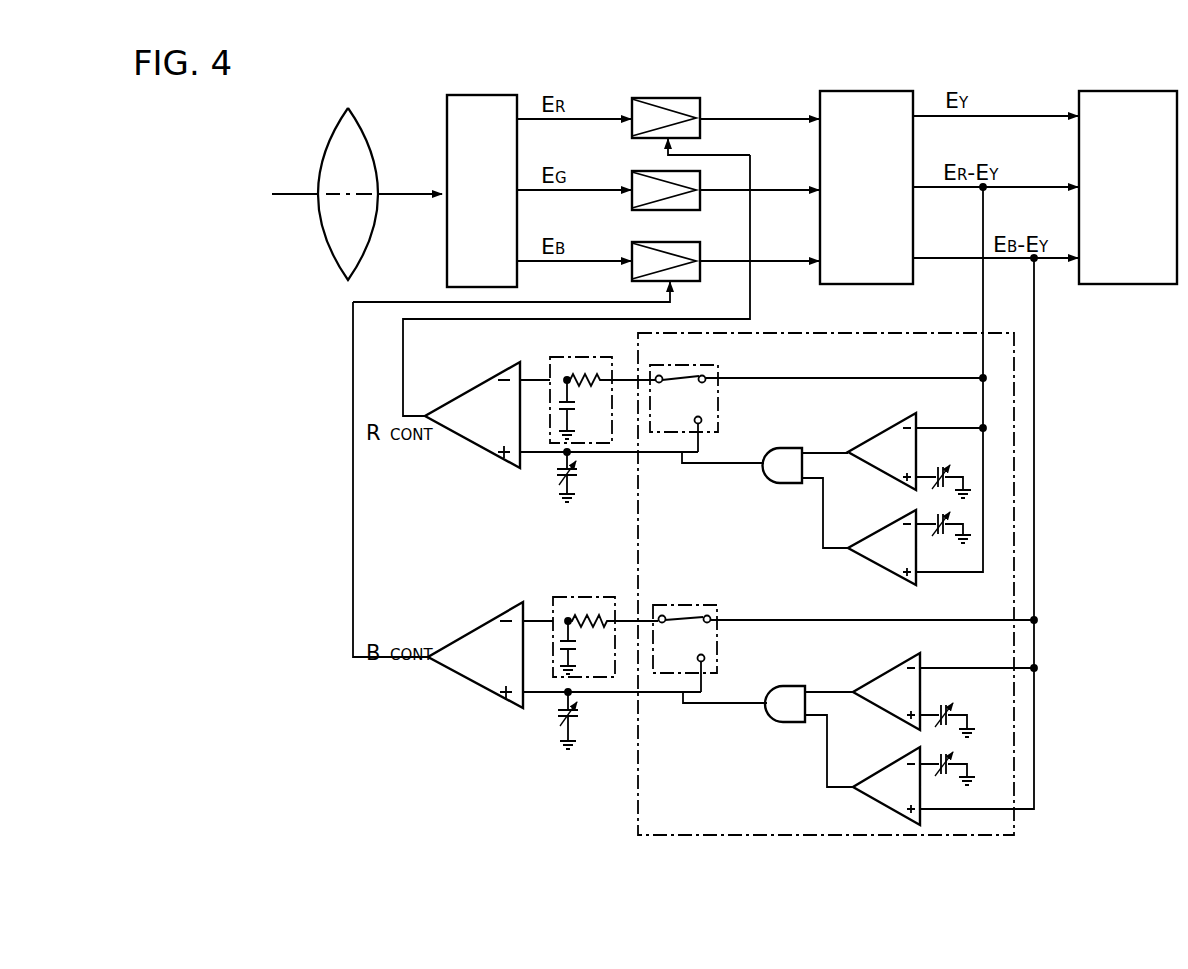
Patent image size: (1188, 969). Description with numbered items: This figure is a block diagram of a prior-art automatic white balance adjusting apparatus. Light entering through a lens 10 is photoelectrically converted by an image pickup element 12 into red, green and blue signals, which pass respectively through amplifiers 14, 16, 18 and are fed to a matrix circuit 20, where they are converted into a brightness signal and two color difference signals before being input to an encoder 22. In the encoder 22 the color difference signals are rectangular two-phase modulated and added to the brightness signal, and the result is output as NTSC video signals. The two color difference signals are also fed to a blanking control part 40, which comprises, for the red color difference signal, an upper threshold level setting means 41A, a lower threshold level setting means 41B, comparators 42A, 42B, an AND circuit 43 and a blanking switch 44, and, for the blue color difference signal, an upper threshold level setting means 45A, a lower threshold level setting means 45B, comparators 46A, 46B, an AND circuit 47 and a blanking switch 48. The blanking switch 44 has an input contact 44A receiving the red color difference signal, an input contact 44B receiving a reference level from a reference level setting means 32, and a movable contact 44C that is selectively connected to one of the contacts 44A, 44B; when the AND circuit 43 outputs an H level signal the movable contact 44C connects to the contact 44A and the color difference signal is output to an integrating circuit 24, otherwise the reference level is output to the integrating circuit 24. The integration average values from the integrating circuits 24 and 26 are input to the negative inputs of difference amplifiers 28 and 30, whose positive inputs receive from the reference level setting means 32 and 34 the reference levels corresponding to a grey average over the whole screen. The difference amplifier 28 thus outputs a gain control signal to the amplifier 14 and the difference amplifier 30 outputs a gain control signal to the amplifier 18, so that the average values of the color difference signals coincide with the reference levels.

The lens 10 is at (357, 118).
The image pickup element 12 is at (478, 95).
The amplifier 14 is at (668, 98).
The amplifier 16 is at (637, 171).
The amplifier 18 is at (637, 242).
The matrix circuit 20 is at (869, 91).
The encoder 22 is at (1126, 91).
The integrating circuit 24 is at (558, 358).
The integrating circuit 26 is at (572, 597).
The difference amplifier 28 is at (468, 390).
The difference amplifier 30 is at (480, 622).
The reference level setting means 32 is at (576, 464).
The reference level setting means 34 is at (580, 700).
The blanking control part 40 is at (1014, 487).
The upper threshold level setting means 41A is at (943, 467).
The lower threshold level setting means 41B is at (943, 537).
The comparator 42A is at (884, 433).
The comparator 42B is at (880, 528).
The AND circuit 43 is at (798, 448).
The blanking switch 44 is at (717, 396).
The input contact 44A is at (706, 377).
The input contact 44B is at (702, 421).
The movable contact 44C is at (676, 383).
The upper threshold level setting means 45A is at (947, 703).
The lower threshold level setting means 45B is at (947, 776).
The comparator 46A is at (880, 675).
The comparator 46B is at (880, 768).
The AND circuit 47 is at (790, 686).
The blanking switch 48 is at (699, 605).